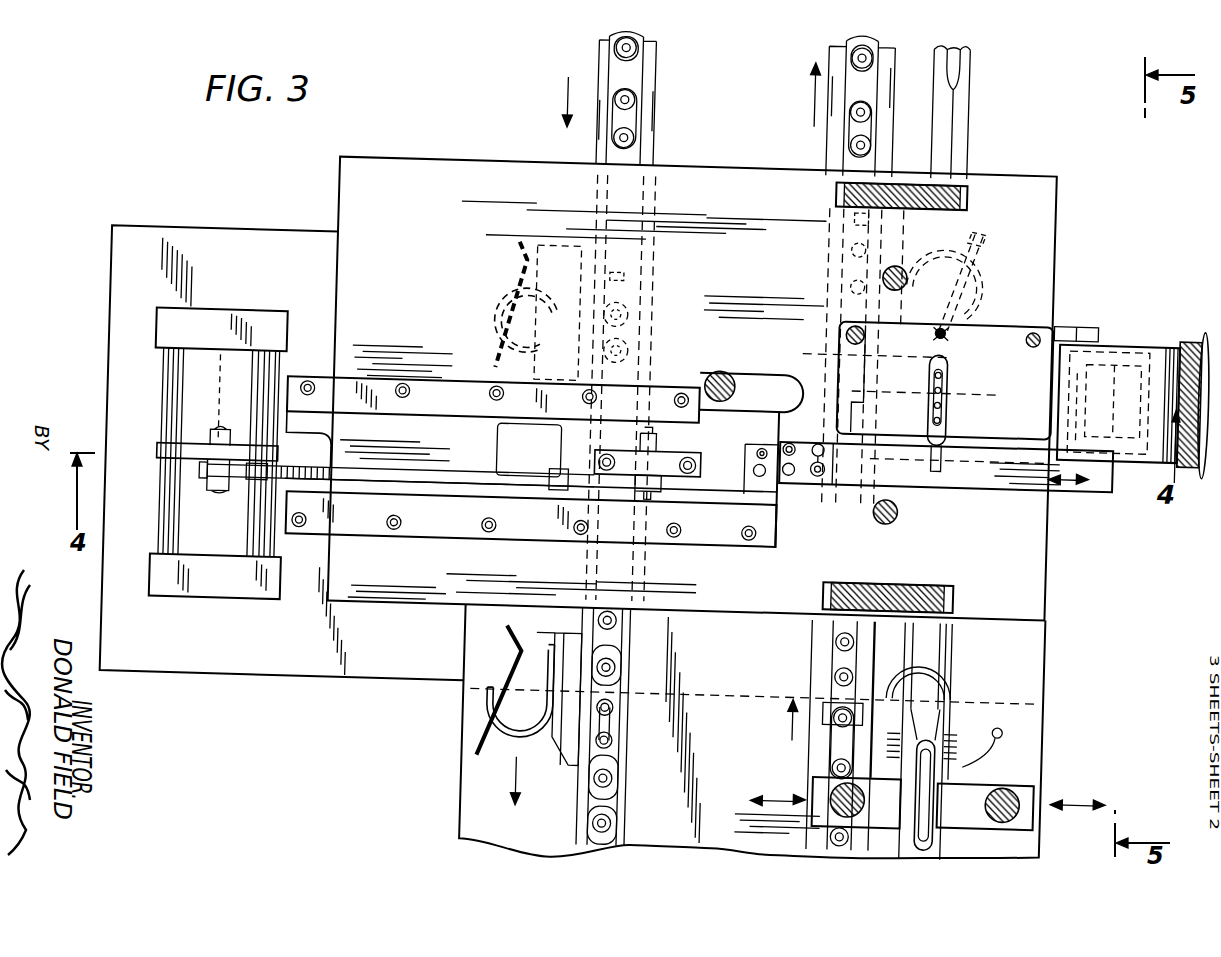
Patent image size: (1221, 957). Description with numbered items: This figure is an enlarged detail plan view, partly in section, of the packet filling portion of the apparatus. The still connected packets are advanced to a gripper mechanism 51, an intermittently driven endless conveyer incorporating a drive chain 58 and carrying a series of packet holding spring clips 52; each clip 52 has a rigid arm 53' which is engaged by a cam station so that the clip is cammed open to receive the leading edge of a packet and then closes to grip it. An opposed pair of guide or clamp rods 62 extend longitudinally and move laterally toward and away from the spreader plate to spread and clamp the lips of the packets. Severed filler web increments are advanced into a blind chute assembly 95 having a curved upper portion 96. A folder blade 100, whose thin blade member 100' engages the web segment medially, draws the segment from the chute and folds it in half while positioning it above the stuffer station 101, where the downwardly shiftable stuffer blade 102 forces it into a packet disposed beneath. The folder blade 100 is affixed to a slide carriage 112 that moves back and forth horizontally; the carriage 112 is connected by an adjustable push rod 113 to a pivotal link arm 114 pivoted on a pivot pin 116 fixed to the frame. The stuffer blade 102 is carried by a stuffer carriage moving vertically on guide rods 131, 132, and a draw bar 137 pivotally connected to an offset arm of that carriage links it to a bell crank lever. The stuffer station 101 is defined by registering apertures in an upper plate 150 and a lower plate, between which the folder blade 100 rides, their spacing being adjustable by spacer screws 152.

The gripper mechanism 51 is at (595, 812).
The packet holding spring clip 52 is at (510, 307).
The arm 53' is at (496, 703).
The drive chain 58 is at (838, 135).
The guide or clamp rod 62 is at (888, 624).
The blind chute assembly 95 is at (1102, 310).
The curved upper portion 96 is at (1133, 347).
The folder blade 100 is at (955, 493).
The thin blade member 100' is at (1159, 384).
The stuffer station 101 is at (960, 364).
The stuffer blade 102 is at (973, 381).
The slide carriage 112 is at (678, 491).
The adjustable push rod 113 is at (532, 462).
The pivotal link arm 114 is at (187, 464).
The pivot pin 116 is at (186, 389).
The guide rod 131 is at (875, 513).
The guide rod 132 is at (895, 258).
The draw bar 137 is at (725, 368).
The upper plate 150 is at (971, 315).
The spacer screw 152 is at (847, 329).